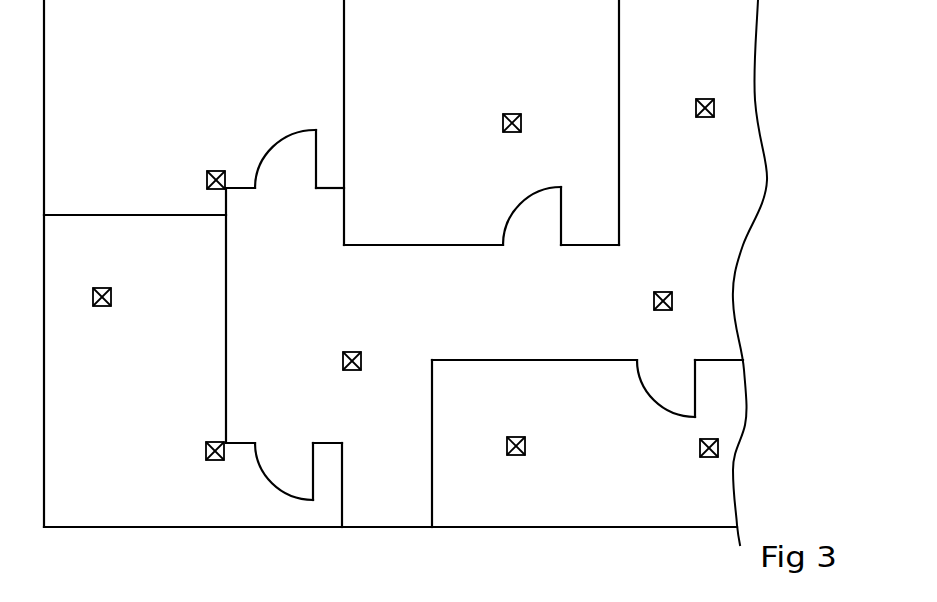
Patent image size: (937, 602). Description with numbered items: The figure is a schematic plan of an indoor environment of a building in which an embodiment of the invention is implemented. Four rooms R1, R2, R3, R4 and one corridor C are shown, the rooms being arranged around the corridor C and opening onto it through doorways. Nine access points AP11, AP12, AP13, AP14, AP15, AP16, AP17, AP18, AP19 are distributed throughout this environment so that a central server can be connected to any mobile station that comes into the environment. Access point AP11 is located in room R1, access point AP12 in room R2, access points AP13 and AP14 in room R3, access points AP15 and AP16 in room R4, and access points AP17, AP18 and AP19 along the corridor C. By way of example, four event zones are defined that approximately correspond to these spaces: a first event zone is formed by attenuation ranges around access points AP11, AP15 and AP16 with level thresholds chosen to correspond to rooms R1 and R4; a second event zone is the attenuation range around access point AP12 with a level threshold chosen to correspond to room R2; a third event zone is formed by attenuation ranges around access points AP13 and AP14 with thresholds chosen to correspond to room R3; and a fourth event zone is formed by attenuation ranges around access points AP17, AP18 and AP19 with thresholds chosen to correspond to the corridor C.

The access point AP11 is at (208, 171).
The access point AP12 is at (521, 122).
The access point AP13 is at (111, 293).
The access point AP14 is at (206, 447).
The access point AP15 is at (514, 455).
The access point AP16 is at (712, 457).
The access point AP17 is at (700, 117).
The access point AP18 is at (672, 300).
The access point AP19 is at (361, 361).
The room R1 is at (194, 251).
The room R2 is at (481, 122).
The room R3 is at (233, 439).
The room R4 is at (587, 443).
The corridor C is at (507, 295).